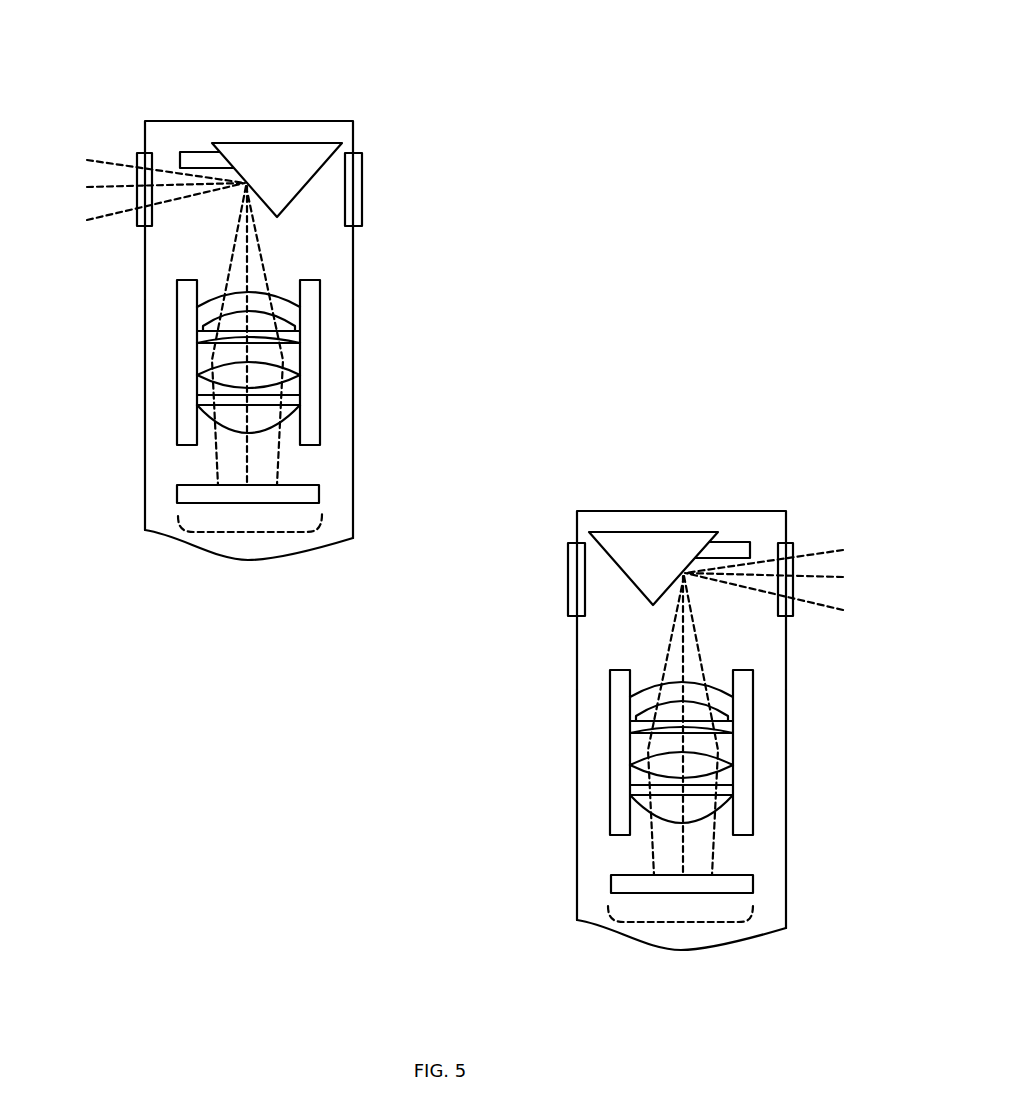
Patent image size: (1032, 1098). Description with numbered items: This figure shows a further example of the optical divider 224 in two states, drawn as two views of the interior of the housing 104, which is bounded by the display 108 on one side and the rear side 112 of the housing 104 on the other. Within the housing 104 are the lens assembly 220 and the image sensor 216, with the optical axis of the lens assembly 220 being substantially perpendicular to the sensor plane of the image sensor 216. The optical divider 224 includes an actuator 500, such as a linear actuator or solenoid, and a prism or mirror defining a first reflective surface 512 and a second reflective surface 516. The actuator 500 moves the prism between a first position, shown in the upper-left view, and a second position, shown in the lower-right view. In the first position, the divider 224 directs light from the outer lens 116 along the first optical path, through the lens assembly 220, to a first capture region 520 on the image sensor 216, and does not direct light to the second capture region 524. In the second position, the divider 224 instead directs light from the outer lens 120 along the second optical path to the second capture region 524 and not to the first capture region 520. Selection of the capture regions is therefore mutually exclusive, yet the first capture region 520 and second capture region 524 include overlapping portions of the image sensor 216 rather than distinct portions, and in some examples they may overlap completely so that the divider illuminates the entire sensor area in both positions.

The housing 104 is at (168, 120).
The display 108 is at (145, 468).
The rear side 112 is at (353, 381).
The outer lens 116 is at (137, 158).
The outer lens 120 is at (362, 181).
The image sensor 216 is at (319, 490).
The lens assembly 220 is at (171, 385).
The optical divider 224 is at (272, 117).
The actuator 500 is at (205, 148).
The first reflective surface 512 is at (232, 140).
The second reflective surface 516 is at (313, 172).
The first capture region 520 is at (248, 560).
The second capture region 524 is at (681, 950).